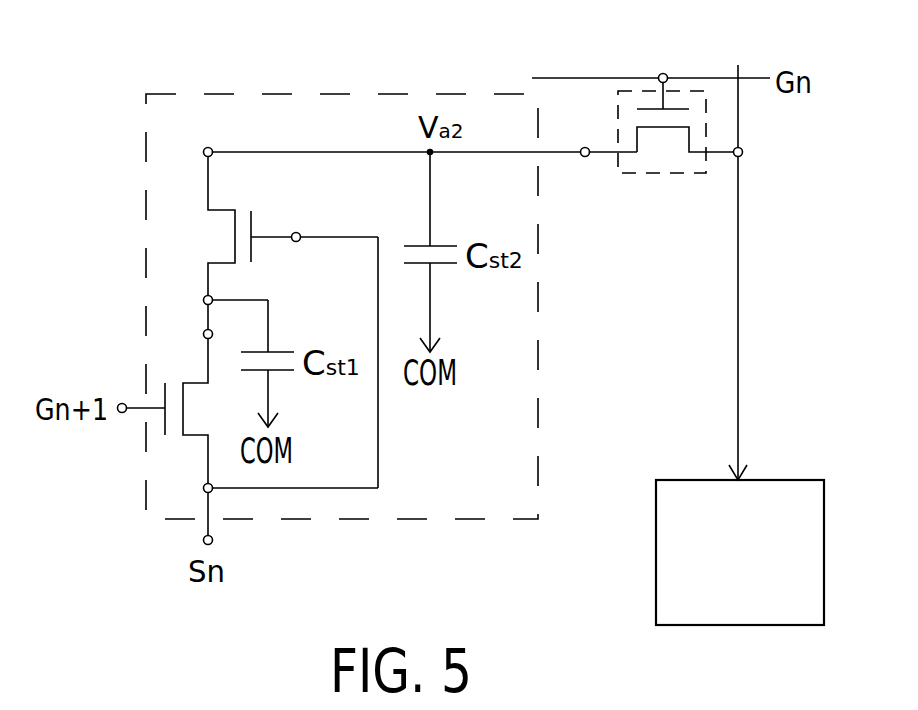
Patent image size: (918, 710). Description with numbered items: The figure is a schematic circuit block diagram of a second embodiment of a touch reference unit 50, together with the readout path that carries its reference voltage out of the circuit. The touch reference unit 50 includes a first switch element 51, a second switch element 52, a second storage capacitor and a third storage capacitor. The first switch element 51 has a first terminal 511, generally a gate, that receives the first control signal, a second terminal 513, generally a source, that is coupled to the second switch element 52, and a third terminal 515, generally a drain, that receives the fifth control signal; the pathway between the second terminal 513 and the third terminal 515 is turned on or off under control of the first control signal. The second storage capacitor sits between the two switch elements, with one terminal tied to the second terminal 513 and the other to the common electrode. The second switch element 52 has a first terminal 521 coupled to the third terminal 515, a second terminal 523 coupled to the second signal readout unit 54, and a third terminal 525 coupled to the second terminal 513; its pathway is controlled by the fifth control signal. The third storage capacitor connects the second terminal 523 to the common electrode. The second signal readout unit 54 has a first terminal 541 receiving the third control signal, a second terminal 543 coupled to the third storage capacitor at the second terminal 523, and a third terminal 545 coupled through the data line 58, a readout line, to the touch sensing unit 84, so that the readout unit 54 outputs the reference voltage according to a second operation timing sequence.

The touch reference unit 50 is at (415, 93).
The first switch element 51 is at (165, 423).
The first terminal of the first switch element 511 is at (122, 403).
The second terminal of the first switch element 513 is at (204, 334).
The third terminal of the first switch element 515 is at (204, 488).
The second switch element 52 is at (235, 236).
The first terminal of the second switch element 521 is at (297, 232).
The second terminal of the second switch element 523 is at (204, 152).
The third terminal of the second switch element 525 is at (204, 300).
The second signal readout unit 54 is at (662, 174).
The first terminal of the second signal readout unit 541 is at (663, 73).
The second terminal of the second signal readout unit 543 is at (586, 147).
The third terminal of the second signal readout unit 545 is at (744, 152).
The data line 58 is at (740, 312).
The touch sensing unit 84 is at (656, 551).